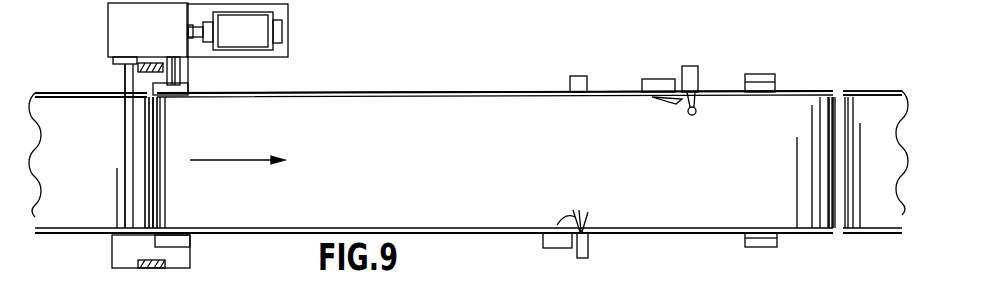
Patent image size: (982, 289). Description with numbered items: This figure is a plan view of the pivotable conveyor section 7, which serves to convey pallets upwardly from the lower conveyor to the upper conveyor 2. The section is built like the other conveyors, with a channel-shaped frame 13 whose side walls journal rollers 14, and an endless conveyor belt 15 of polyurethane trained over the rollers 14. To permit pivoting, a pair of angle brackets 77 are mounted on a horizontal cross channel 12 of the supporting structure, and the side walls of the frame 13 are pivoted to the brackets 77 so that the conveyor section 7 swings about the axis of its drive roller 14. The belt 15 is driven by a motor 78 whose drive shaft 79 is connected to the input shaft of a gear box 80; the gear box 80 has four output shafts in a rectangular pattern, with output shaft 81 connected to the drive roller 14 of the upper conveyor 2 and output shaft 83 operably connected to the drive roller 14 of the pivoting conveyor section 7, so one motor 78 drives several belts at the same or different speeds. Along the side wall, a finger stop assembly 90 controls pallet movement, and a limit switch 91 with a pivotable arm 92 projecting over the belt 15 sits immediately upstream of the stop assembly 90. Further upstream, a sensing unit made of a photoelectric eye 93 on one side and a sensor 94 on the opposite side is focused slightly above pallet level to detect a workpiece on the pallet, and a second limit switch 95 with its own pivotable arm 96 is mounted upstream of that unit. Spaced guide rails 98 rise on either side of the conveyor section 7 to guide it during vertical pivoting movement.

The upper conveyor 2 is at (74, 288).
The pivotable conveyor section 7 is at (400, 84).
The horizontal cross channel 12 is at (112, 249).
The channel-shaped frame 13 is at (53, 93).
The roller 14 is at (844, 286).
The endless conveyor belt 15 is at (70, 110).
The angle bracket 77 is at (180, 95).
The motor 78 is at (257, 42).
The drive shaft 79 is at (198, 37).
The gear box 80 is at (154, 34).
The output shaft 81 is at (128, 90).
The output shaft 83 is at (158, 86).
The finger stop assembly 90 is at (698, 82).
The limit switch 91 is at (655, 78).
The pivotable arm 92 is at (680, 104).
The photoelectric eye 93 is at (583, 258).
The sensor 94 is at (570, 79).
The second limit switch 95 is at (560, 248).
The pivotable arm 96 is at (557, 225).
The guide rail 98 is at (775, 77).